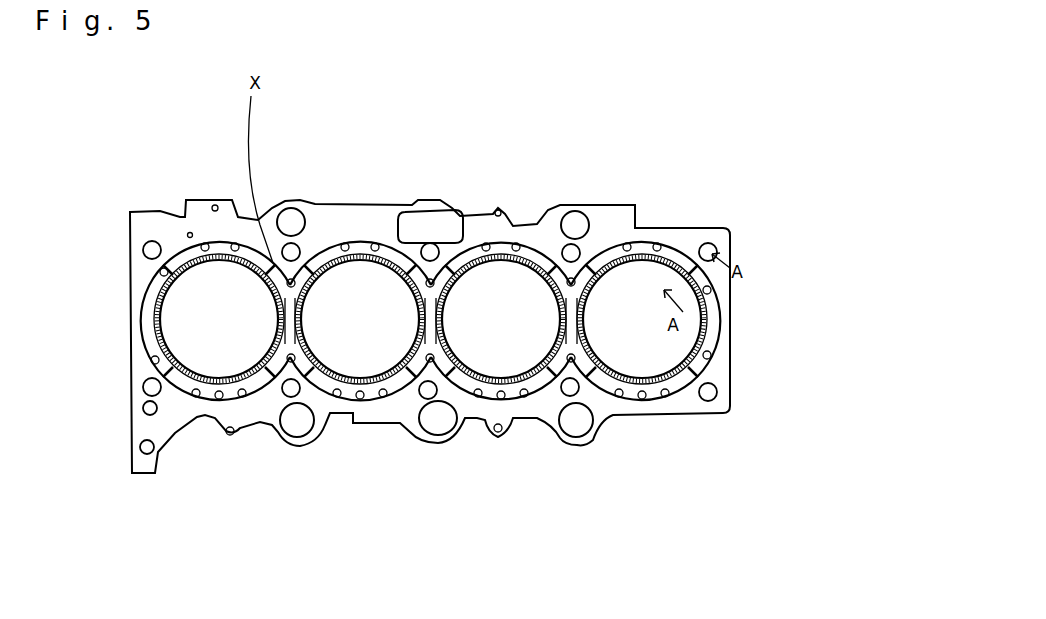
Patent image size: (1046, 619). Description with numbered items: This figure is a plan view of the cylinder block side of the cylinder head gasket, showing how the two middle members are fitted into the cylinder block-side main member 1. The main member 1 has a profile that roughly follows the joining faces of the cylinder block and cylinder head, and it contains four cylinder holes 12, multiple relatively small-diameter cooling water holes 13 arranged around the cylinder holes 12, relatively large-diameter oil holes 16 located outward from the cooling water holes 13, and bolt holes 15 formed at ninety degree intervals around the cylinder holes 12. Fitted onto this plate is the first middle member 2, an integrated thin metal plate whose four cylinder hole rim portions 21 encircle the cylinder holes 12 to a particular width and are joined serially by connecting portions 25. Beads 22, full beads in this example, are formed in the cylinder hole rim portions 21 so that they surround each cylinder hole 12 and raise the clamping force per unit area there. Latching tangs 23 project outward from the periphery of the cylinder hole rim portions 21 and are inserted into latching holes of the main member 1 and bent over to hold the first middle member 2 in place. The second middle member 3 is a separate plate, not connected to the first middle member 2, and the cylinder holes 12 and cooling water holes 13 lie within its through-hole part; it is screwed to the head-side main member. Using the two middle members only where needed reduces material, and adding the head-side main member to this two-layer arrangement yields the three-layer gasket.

The cylinder block-side main member 1 is at (531, 222).
The first middle member 2 is at (148, 326).
The second middle member 3 is at (697, 226).
The cylinder holes 12 is at (229, 365).
The cooling water holes 13 is at (375, 258).
The bolt holes 15 is at (156, 397).
The oil holes 16 is at (291, 208).
The cylinder hole rim portions 21 is at (170, 300).
The beads 22 is at (305, 310).
The latching tangs 23 is at (342, 245).
The connecting portions 25 is at (272, 322).